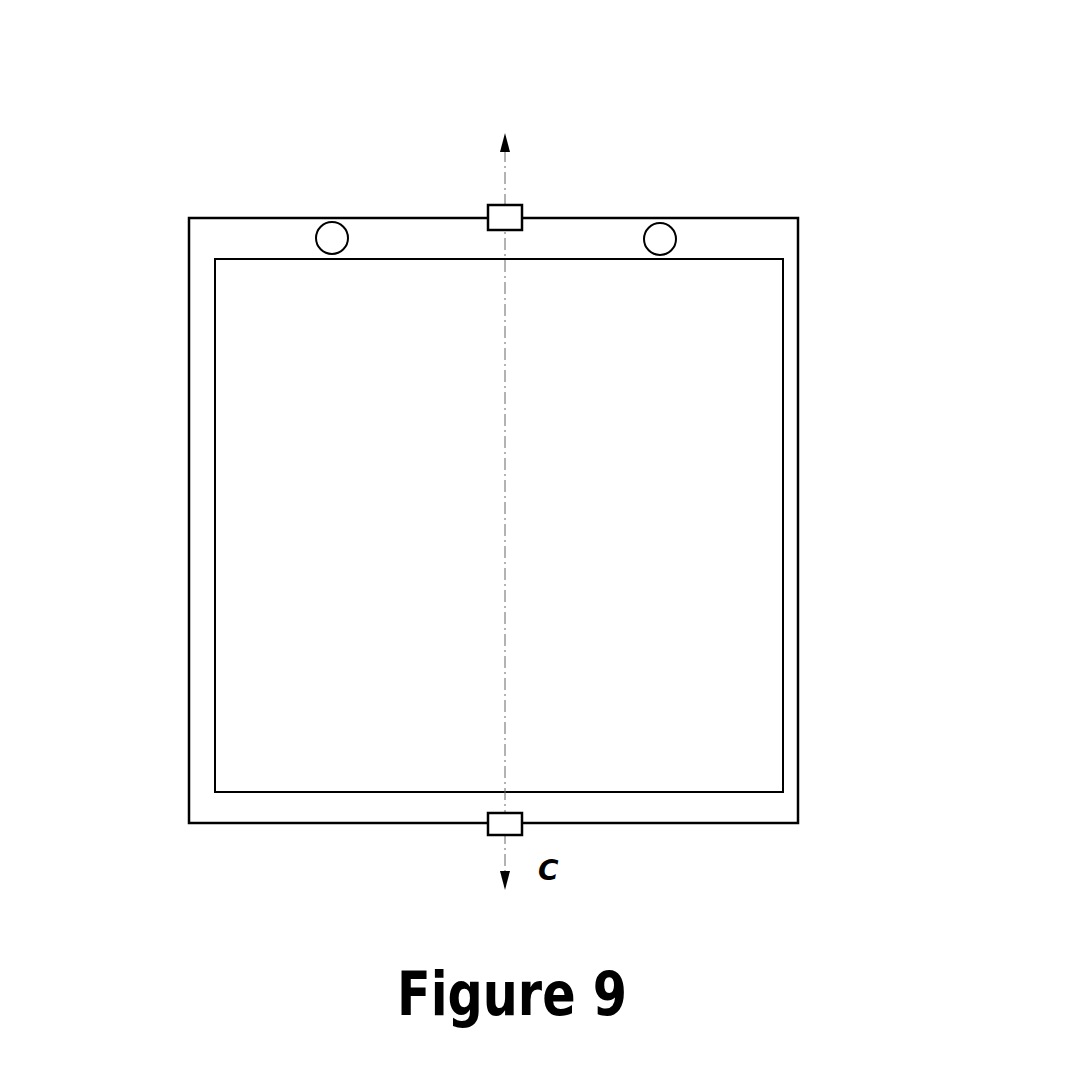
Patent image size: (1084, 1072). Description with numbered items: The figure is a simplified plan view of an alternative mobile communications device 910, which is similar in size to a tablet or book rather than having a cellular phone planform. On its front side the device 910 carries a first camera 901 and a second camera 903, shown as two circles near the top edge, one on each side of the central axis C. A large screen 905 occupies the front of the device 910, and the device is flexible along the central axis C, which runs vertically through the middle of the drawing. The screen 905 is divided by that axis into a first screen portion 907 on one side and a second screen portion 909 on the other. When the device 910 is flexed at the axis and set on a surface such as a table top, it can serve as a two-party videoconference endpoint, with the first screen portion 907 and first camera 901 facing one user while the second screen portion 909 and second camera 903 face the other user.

The first camera 901 is at (337, 239).
The second camera 903 is at (665, 239).
The screen 905 is at (195, 354).
The first screen portion 907 is at (257, 700).
The second screen portion 909 is at (738, 705).
The device 910 is at (411, 138).